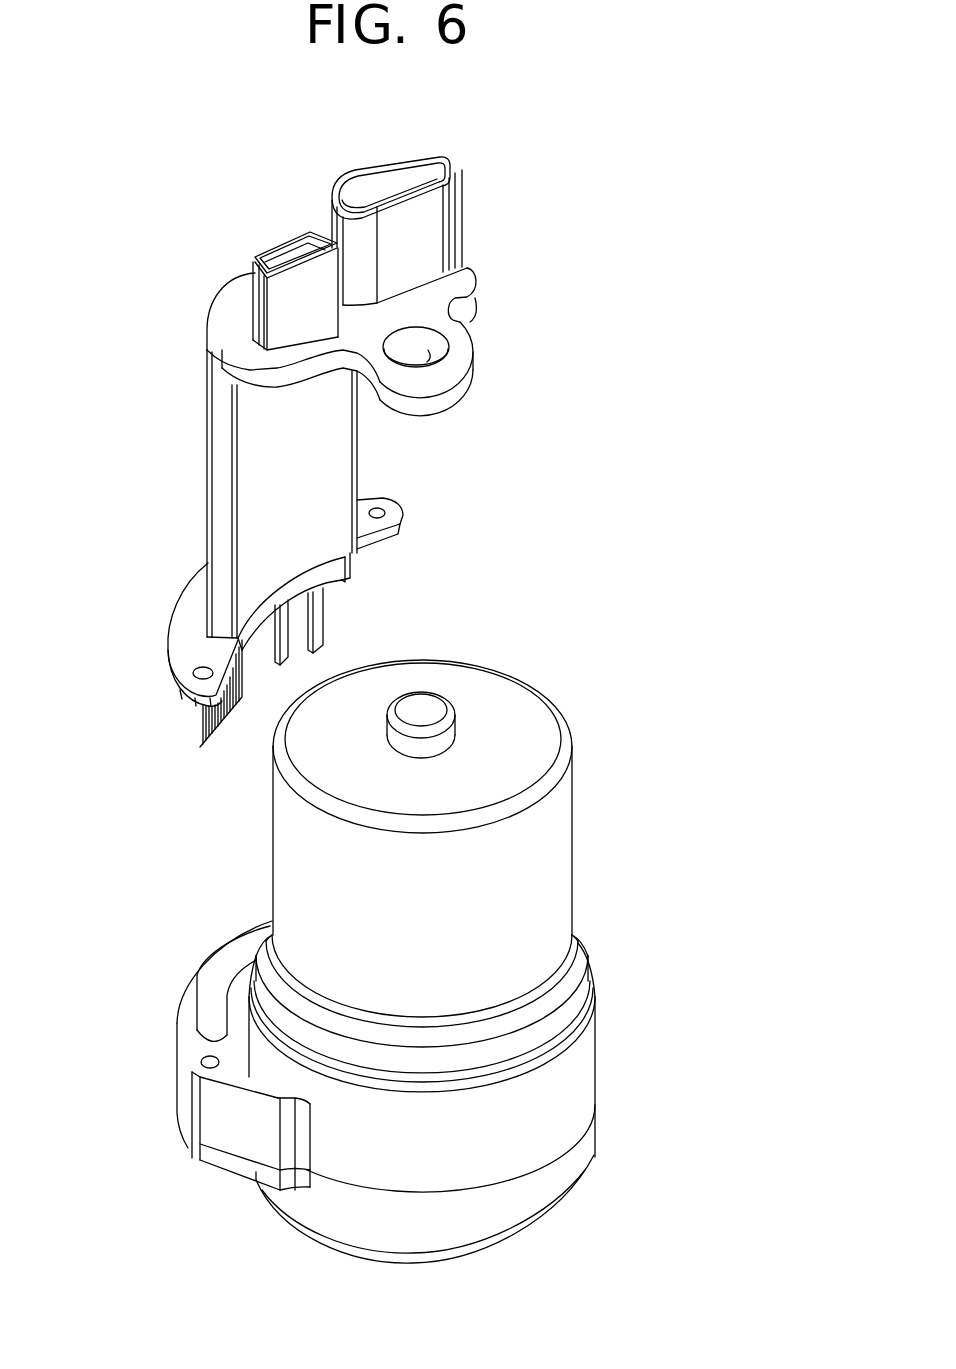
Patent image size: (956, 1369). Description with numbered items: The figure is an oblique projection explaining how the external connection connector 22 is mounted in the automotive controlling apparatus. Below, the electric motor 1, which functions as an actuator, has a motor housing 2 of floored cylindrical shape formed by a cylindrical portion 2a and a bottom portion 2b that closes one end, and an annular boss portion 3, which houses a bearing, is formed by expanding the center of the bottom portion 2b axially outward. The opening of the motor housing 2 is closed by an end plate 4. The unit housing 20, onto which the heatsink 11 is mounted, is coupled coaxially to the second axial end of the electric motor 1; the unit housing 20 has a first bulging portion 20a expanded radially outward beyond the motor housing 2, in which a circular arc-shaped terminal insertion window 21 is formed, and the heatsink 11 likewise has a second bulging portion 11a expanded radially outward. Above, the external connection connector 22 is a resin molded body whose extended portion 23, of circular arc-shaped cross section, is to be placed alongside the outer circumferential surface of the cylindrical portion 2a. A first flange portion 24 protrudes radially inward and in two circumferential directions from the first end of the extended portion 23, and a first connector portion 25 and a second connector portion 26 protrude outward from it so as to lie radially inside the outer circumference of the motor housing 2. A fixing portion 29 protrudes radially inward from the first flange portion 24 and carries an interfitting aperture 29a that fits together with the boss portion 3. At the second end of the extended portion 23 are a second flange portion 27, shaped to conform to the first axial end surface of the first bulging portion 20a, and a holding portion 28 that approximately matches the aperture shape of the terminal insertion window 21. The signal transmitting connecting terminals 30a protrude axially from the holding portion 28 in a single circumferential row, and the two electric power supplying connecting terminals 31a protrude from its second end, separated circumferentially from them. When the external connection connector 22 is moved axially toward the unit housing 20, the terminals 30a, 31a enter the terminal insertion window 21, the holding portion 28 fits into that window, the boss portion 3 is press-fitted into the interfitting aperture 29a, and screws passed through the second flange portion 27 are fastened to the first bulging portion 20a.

The electric motor 1 is at (577, 725).
The motor housing 2 is at (572, 857).
The cylindrical portion 2a is at (552, 807).
The bottom portion 2b is at (512, 707).
The boss portion 3 is at (445, 702).
The end plate 4 is at (555, 977).
The heatsink 11 is at (384, 1170).
The second bulging portion 11a is at (210, 1157).
The unit housing 20 is at (381, 1028).
The first bulging portion 20a is at (188, 1033).
The terminal insertion window 21 is at (227, 982).
The external connection connector 22 is at (208, 432).
The extended portion 23 is at (333, 446).
The first flange portion 24 is at (390, 321).
The first connector portion 25 is at (262, 248).
The second connector portion 26 is at (338, 183).
The second flange portion 27 is at (178, 632).
The holding portion 28 is at (325, 577).
The fixing portion 29 is at (477, 363).
The interfitting aperture 29a is at (430, 350).
The signal transmitting connecting terminals 30a is at (195, 722).
The electric power supplying connecting terminals 31a is at (323, 617).